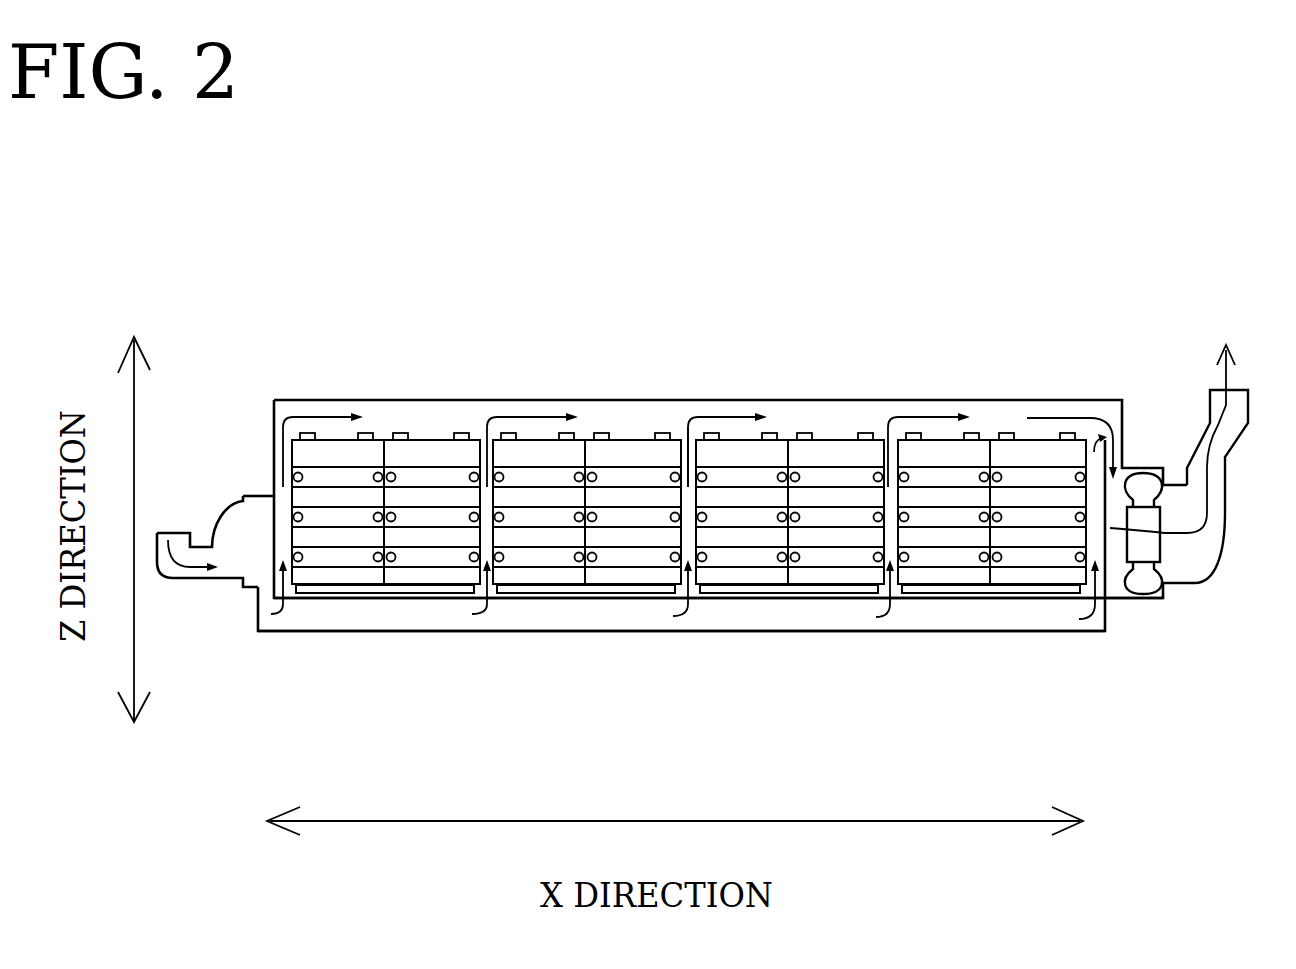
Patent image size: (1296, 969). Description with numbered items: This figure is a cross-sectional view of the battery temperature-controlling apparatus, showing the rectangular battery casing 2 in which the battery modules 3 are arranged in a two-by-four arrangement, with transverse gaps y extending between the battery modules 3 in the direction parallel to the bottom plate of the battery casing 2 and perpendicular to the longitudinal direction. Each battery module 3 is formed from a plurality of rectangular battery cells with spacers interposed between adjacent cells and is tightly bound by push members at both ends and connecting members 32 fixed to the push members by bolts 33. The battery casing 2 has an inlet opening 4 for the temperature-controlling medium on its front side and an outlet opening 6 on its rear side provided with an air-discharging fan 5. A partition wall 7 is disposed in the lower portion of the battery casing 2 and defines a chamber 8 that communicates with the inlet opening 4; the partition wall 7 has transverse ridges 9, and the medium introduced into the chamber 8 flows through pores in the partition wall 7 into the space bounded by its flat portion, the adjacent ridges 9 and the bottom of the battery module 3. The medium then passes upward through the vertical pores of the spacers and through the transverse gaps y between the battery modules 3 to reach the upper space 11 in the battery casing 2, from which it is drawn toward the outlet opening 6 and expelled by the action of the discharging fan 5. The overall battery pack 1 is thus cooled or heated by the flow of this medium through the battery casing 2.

The battery pack 1 is at (528, 380).
The battery casing 2 is at (577, 400).
The battery module 3 is at (396, 424).
The inlet opening 4 is at (187, 532).
The air-discharging fan 5 is at (1142, 480).
The outlet opening 6 is at (1233, 390).
The partition wall 7 is at (1002, 598).
The chamber 8 is at (752, 615).
The transverse ridge 9 is at (663, 593).
The upper space 11 is at (792, 415).
The connecting member 32 is at (818, 475).
The bolt 33 is at (998, 473).
The transverse gap y is at (687, 418).